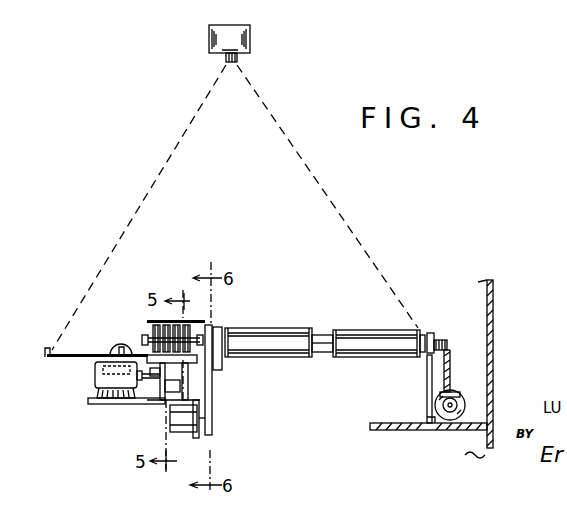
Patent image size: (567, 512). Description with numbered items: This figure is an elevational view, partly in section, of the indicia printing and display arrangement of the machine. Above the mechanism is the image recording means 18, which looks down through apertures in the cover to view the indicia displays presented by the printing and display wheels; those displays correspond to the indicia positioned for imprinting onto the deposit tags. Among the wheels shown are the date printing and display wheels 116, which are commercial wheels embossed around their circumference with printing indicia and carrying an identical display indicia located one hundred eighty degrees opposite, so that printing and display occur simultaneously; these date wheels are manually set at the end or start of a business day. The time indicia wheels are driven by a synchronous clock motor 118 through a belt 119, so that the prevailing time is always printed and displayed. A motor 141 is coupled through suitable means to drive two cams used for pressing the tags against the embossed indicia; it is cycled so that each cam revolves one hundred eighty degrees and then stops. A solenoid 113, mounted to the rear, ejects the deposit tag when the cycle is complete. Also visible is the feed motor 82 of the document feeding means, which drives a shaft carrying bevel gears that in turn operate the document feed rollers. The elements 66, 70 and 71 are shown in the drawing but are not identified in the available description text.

The image recording means 18 is at (210, 42).
The solenoid 113 is at (112, 352).
The bearing cap 66 is at (118, 346).
The date printing and display wheels 116 is at (153, 330).
The motor 141 is at (95, 392).
The synchronous clock motor 118 is at (172, 418).
The belt 119 is at (212, 392).
The first roller 70 is at (278, 327).
The second roller 71 is at (378, 330).
The feed motor 82 is at (467, 397).